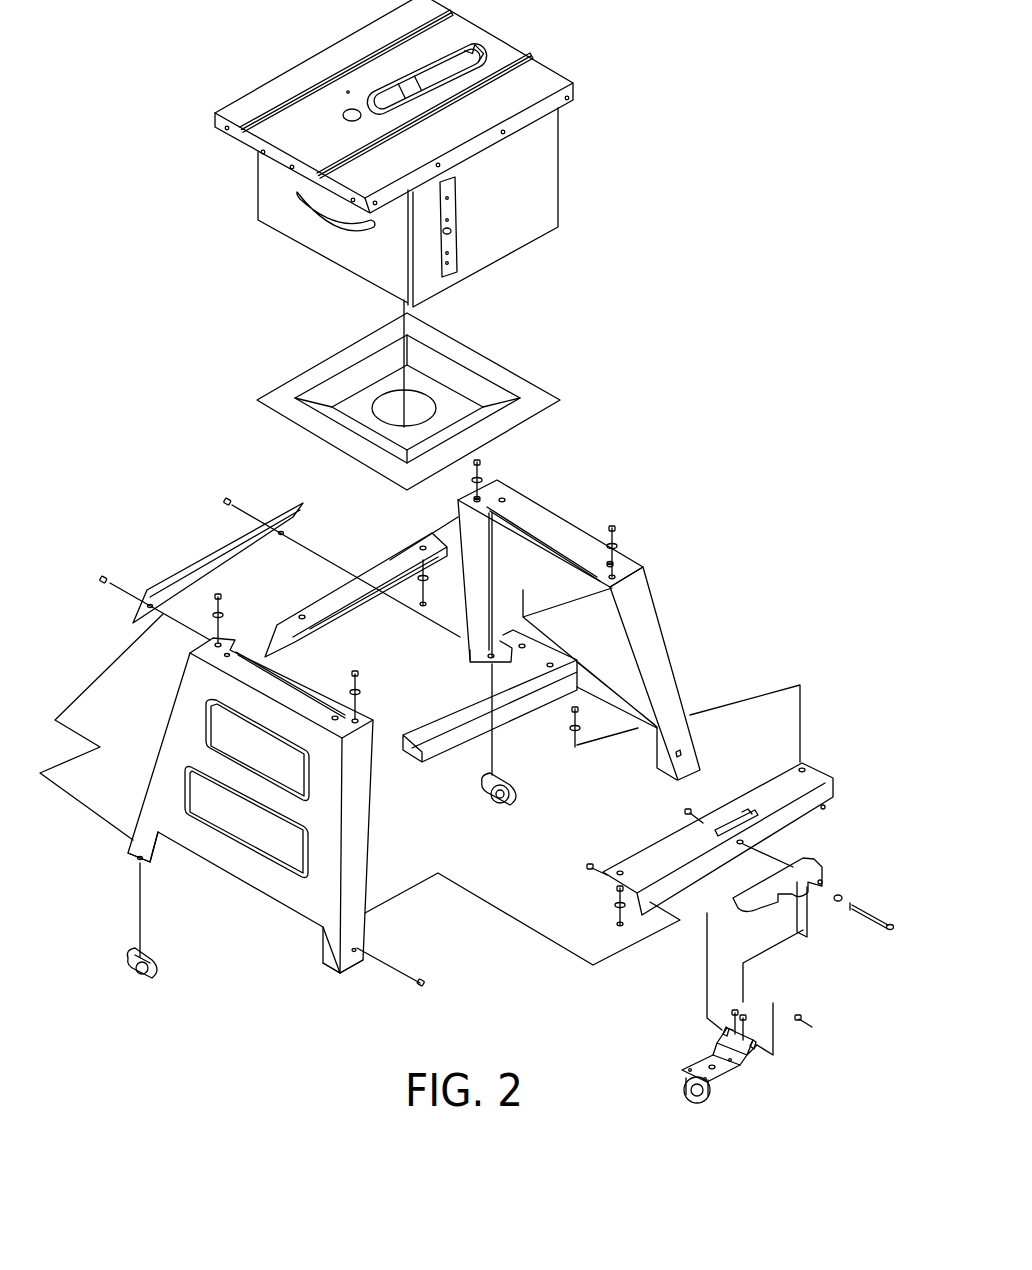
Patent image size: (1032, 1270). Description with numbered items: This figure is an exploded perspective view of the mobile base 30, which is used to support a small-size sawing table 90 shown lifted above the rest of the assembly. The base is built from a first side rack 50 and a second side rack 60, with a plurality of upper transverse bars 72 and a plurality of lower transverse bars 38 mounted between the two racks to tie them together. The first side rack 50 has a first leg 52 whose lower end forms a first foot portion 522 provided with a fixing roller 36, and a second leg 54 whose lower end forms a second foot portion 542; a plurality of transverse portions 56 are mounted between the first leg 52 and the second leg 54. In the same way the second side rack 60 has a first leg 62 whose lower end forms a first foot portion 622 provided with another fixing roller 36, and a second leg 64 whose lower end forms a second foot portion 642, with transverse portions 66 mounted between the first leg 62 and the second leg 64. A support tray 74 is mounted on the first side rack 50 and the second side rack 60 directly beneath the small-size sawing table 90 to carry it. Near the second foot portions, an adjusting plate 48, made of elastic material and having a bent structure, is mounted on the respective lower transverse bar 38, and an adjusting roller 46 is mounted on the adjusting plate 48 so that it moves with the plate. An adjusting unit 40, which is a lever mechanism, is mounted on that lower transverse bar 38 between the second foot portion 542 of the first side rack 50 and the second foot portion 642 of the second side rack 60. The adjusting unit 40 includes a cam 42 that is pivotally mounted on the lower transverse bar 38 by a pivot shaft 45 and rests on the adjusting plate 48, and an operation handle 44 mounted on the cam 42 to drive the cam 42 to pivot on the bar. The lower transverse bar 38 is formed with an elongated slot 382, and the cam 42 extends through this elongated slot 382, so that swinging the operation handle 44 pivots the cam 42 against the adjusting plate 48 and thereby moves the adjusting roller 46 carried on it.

The mobile base 30 is at (237, 377).
The fixing roller 36 is at (150, 980).
The lower transverse bar 38 is at (173, 577).
The elongated slot 382 is at (715, 812).
The adjusting unit 40 is at (760, 928).
The cam 42 is at (800, 913).
The operation handle 44 is at (810, 873).
The pivot shaft 45 is at (873, 927).
The adjusting roller 46 is at (715, 1087).
The adjusting plate 48 is at (732, 1075).
The first side rack 50 is at (246, 841).
The first leg 52 is at (173, 773).
The first foot portion 522 is at (140, 850).
The second leg 54 is at (337, 895).
The second foot portion 542 is at (350, 970).
The transverse portions 56 is at (265, 676).
The second side rack 60 is at (588, 605).
The first leg 62 is at (495, 577).
The first foot portion 622 is at (473, 663).
The second leg 64 is at (667, 677).
The second foot portion 642 is at (698, 760).
The transverse portions 66 is at (577, 538).
The upper transverse bar 72 is at (380, 570).
The support tray 74 is at (470, 362).
The small-size sawing table 90 is at (548, 178).